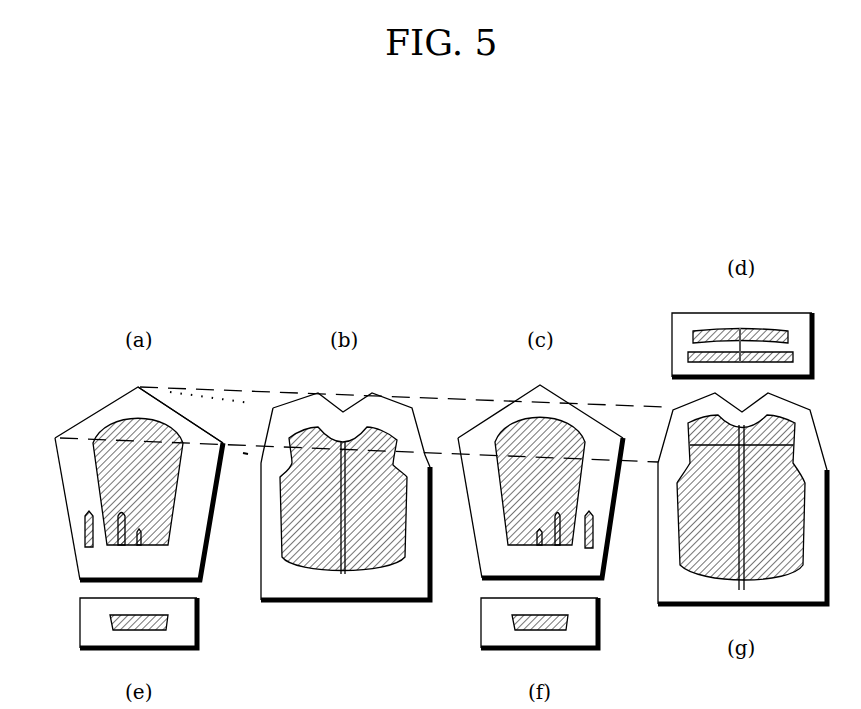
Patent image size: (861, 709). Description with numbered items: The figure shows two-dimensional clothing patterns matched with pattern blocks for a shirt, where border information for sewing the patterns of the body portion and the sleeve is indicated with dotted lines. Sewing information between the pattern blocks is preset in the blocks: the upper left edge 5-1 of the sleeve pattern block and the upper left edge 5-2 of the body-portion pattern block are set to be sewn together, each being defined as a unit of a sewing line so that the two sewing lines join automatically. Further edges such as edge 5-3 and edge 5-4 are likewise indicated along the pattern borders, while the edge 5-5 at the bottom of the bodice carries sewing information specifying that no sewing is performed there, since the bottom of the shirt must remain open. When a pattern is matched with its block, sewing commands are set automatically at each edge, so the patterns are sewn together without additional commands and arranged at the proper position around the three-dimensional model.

The upper left edge of pattern block a 5-1 is at (97, 412).
The upper left edge of pattern block b 5-2 is at (658, 463).
The sleeve panel edge 5-3 is at (177, 410).
The body panel side edge 5-4 is at (263, 447).
The edge 5-5 is at (355, 604).